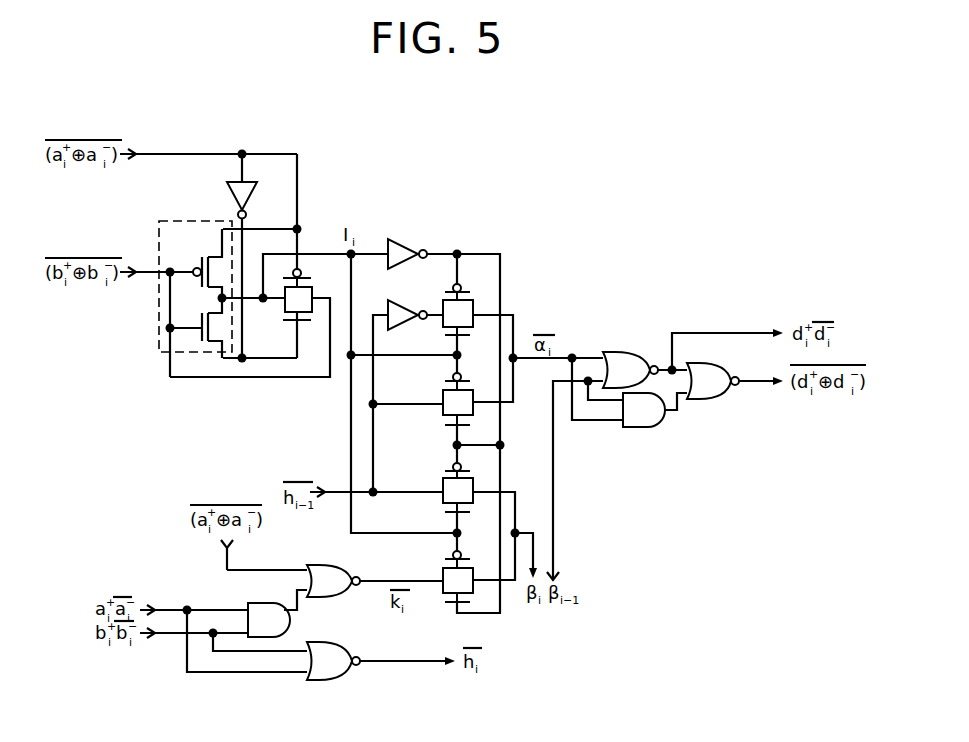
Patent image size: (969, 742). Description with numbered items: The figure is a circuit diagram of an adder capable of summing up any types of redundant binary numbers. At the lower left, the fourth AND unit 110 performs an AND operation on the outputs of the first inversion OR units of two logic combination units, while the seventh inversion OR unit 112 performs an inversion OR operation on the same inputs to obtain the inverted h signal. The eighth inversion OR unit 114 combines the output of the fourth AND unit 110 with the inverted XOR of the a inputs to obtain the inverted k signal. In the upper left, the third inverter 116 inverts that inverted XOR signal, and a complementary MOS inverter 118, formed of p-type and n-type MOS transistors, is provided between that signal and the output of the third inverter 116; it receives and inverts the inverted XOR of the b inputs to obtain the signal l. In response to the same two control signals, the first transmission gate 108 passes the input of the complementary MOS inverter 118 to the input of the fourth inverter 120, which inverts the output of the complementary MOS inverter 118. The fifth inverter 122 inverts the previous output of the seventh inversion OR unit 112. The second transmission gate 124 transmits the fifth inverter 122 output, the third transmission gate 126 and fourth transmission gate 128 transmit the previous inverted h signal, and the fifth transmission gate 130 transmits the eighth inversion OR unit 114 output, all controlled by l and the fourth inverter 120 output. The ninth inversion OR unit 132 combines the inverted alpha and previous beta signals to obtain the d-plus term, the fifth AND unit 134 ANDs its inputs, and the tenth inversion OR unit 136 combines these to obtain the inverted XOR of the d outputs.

The first transmission gate 108 is at (283, 312).
The fourth AND unit 110 is at (292, 622).
The seventh inversion OR unit 112 is at (328, 680).
The eighth inversion OR unit 114 is at (330, 565).
The third inverter 116 is at (233, 198).
The complementary MOS inverter 118 is at (159, 250).
The fourth inverter 120 is at (405, 238).
The fifth inverter 122 is at (408, 300).
The second transmission gate 124 is at (442, 325).
The third transmission gate 126 is at (445, 393).
The fourth transmission gate 128 is at (443, 482).
The fifth transmission gate 130 is at (443, 570).
The ninth inversion OR unit 132 is at (625, 351).
The fifth AND unit 134 is at (640, 428).
The tenth inversion OR unit 136 is at (714, 367).